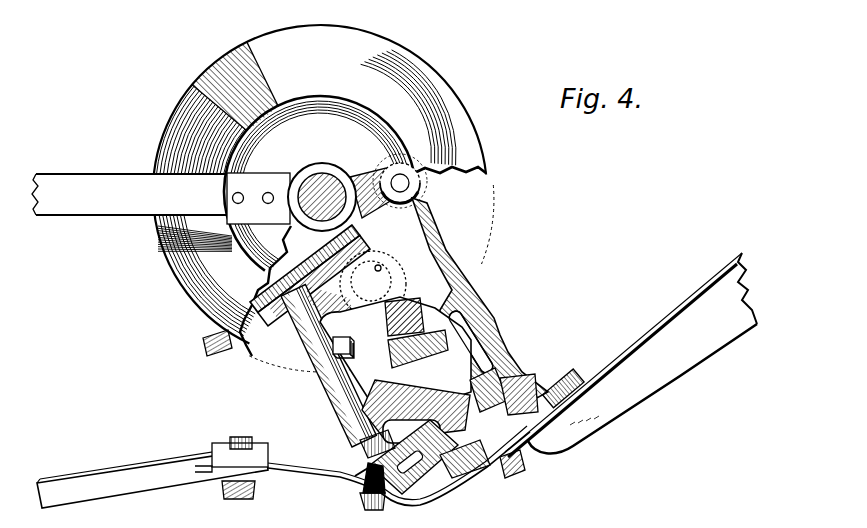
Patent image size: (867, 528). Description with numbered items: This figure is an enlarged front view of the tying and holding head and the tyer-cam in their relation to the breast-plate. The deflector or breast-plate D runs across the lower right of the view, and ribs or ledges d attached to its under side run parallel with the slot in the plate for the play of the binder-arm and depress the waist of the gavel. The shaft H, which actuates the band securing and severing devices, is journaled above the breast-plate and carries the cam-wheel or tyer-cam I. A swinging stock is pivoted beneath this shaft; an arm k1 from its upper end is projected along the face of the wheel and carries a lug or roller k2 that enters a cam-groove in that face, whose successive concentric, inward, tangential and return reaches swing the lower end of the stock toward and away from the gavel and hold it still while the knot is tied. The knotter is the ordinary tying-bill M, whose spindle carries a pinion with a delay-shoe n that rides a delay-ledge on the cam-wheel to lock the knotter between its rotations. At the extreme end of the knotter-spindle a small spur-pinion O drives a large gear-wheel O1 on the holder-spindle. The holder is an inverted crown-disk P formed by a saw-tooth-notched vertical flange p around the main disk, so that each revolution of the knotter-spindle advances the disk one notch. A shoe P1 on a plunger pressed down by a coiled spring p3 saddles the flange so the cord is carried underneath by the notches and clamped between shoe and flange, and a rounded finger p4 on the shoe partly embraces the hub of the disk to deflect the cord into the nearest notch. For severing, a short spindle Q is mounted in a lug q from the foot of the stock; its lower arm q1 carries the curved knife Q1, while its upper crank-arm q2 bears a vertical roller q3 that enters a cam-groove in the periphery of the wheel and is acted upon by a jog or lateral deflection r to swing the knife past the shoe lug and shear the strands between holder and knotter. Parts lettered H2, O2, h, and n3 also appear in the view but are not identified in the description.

The cam-wheel I is at (323, 198).
The jog or lateral deflection r is at (172, 152).
The shaft H is at (322, 197).
The arm k1 is at (381, 203).
The lug or roller k2 is at (420, 190).
The lever H2 is at (440, 270).
The rack bar O2 is at (310, 275).
The gear-wheel O1 is at (328, 366).
The spur-pinion O is at (382, 260).
The delay-shoe n is at (420, 310).
The roller h is at (371, 281).
The vertical roller q3 is at (373, 284).
The coiled spring p3 is at (395, 372).
The crank-arm q2 is at (412, 321).
The slot n3 is at (471, 343).
The inverted crown-disk P is at (415, 445).
The vertical flange p is at (406, 461).
The arm q1 is at (489, 390).
The lug q is at (503, 360).
The short spindle Q is at (556, 385).
The curved knife Q1 is at (465, 463).
The shoe P1 is at (367, 445).
The rounded finger p4 is at (356, 467).
The tying-bill M is at (526, 452).
The breast-plate D is at (642, 344).
The ribs or ledges d is at (636, 383).